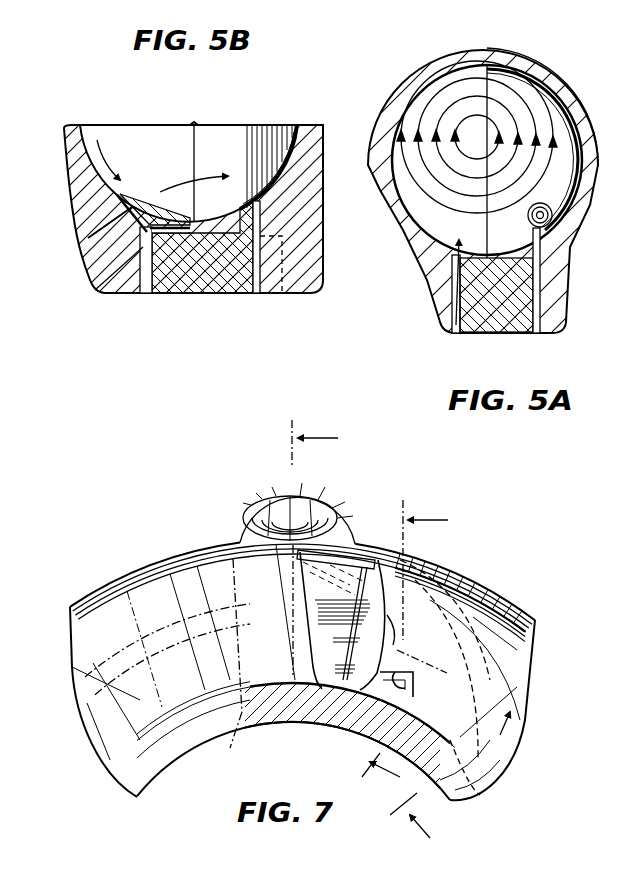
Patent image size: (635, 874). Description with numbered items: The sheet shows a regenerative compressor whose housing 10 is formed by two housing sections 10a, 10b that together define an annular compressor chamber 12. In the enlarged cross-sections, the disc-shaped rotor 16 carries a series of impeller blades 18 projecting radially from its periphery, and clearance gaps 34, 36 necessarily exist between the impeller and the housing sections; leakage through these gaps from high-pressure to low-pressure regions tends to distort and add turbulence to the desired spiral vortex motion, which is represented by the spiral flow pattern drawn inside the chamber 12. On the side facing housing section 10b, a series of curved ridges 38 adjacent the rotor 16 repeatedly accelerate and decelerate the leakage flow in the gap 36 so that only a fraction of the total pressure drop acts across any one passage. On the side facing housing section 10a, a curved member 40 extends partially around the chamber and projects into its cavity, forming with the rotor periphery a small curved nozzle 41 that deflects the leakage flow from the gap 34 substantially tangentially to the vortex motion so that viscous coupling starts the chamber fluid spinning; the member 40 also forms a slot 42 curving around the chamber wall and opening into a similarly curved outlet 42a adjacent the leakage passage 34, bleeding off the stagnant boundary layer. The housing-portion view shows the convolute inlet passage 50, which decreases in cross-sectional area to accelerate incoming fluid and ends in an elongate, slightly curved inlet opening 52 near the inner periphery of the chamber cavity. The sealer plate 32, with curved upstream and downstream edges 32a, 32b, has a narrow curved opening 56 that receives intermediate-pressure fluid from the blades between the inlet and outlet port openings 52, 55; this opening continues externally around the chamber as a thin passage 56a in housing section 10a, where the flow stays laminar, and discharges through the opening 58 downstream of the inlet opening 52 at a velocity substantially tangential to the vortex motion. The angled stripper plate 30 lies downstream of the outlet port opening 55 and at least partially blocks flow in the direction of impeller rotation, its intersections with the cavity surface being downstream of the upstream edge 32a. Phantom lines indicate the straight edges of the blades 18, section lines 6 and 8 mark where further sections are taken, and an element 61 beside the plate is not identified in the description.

In FIG. 5B, the housing section 10a is at (74, 125).
In FIG. 5A, the housing section 10a is at (425, 72).
In FIG. 7, the housing section 10a is at (100, 612).
In FIG. 5B, the housing section 10b is at (310, 128).
In FIG. 5A, the housing section 10b is at (523, 60).
In FIG. 5B, the impeller blades 18 is at (247, 125).
In FIG. 5A, the impeller blades 18 is at (548, 100).
In FIG. 7, the impeller blades 18 is at (150, 602).
In FIG. 5B, the rotor 16 is at (214, 288).
In FIG. 5A, the rotor 16 is at (505, 320).
In FIG. 5B, the clearance gap 34 is at (146, 293).
In FIG. 5A, the clearance gap 34 is at (457, 325).
In FIG. 5A, the clearance gap 36 is at (538, 322).
In FIG. 5B, the curved ridges 38 is at (268, 285).
In FIG. 5B, the curved member 40 is at (140, 205).
In FIG. 5B, the nozzle 41 is at (193, 229).
In FIG. 5B, the slot 42 is at (108, 230).
In FIG. 5B, the outlet 42a is at (100, 285).
In FIG. 7, the section line 6- 6 is at (346, 606).
In FIG. 7, the section line 8- 8 is at (419, 669).
In FIG. 7, the convolute inlet passage 50 is at (272, 505).
In FIG. 7, the narrow curved opening 56 is at (350, 560).
In FIG. 7, the passage 56a is at (512, 612).
In FIG. 7, the upstream edge 32a is at (284, 600).
In FIG. 7, the downstream edge 32b is at (410, 636).
In FIG. 7, the rib 61 is at (359, 623).
In FIG. 7, the stripper plate 30 is at (317, 680).
In FIG. 7, the sealer plate 32 is at (348, 677).
In FIG. 7, the outlet port opening 55 is at (223, 670).
In FIG. 7, the inlet port opening 52 is at (432, 705).
In FIG. 7, the opening 58 is at (463, 788).
In FIG. 5A, the housing 10 is at (628, 308).
In FIG. 7, the compressor chamber 12 is at (625, 580).